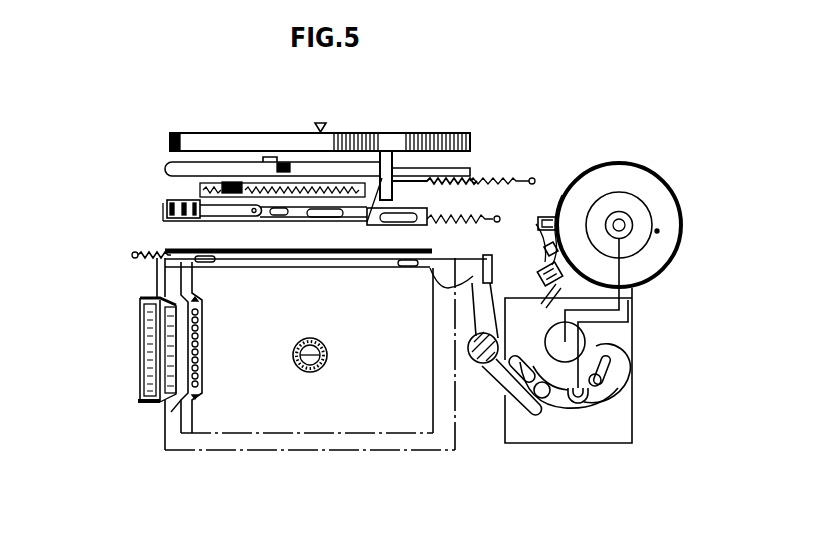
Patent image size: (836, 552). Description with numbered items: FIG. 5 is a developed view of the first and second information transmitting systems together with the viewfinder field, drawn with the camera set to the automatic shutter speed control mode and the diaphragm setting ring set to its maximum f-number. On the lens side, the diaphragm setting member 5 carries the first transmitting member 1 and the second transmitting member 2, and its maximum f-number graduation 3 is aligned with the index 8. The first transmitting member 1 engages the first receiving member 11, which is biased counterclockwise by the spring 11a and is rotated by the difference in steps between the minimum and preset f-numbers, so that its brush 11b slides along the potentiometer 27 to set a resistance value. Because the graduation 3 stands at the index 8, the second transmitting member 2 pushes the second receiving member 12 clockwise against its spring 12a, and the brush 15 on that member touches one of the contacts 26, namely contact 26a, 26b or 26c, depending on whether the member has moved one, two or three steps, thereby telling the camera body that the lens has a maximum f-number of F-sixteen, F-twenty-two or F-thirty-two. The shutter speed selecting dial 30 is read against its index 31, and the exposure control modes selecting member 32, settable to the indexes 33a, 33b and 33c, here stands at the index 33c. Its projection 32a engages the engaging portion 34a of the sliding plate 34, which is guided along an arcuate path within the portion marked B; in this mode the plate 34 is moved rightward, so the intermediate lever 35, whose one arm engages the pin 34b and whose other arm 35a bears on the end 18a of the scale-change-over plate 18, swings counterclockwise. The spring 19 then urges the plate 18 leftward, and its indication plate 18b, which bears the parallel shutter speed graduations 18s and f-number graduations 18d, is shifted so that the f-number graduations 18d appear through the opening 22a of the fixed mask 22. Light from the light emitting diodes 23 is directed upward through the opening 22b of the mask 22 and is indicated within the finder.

The first transmitting member 1 is at (283, 152).
The second transmitting member 2 is at (393, 193).
The maximum f-number graduation 3 is at (323, 146).
The diaphragm setting member 5 is at (461, 136).
The index 8 is at (321, 122).
The first receiving member 11 is at (165, 176).
The spring 11a is at (484, 180).
The brush 11b is at (232, 183).
The second receiving member 12 is at (373, 197).
The spring 12a is at (432, 200).
The brush 15 is at (305, 218).
The scale-change-over plate 18 is at (300, 268).
The end 18a is at (486, 257).
The indication plate 18b is at (146, 385).
The f-number graduations 18d is at (143, 300).
The shutter speed graduations 18s is at (145, 346).
The spring 19 is at (134, 260).
The fixed mask 22 is at (384, 441).
The opening 22a is at (180, 408).
The opening 22b is at (199, 374).
The light emitting diodes 23 is at (200, 344).
The guide rail 26 is at (167, 205).
The contact 26a is at (262, 214).
The contact 26b is at (190, 220).
The contact 26c is at (165, 215).
The potentiometer 27 is at (205, 190).
The shutter speed selecting dial 30 is at (638, 172).
The index 31 is at (551, 212).
The exposure control modes selecting member 32 is at (540, 276).
The projection 32a is at (642, 289).
The index 33a is at (540, 220).
The index 33b is at (548, 247).
The index 33c is at (553, 302).
The sliding plate 34 is at (620, 374).
The engaging portion 34a is at (587, 400).
The pin 34b is at (543, 400).
The intermediate lever 35 is at (492, 380).
The arm 35a is at (458, 288).
The bulb setting block B is at (620, 408).